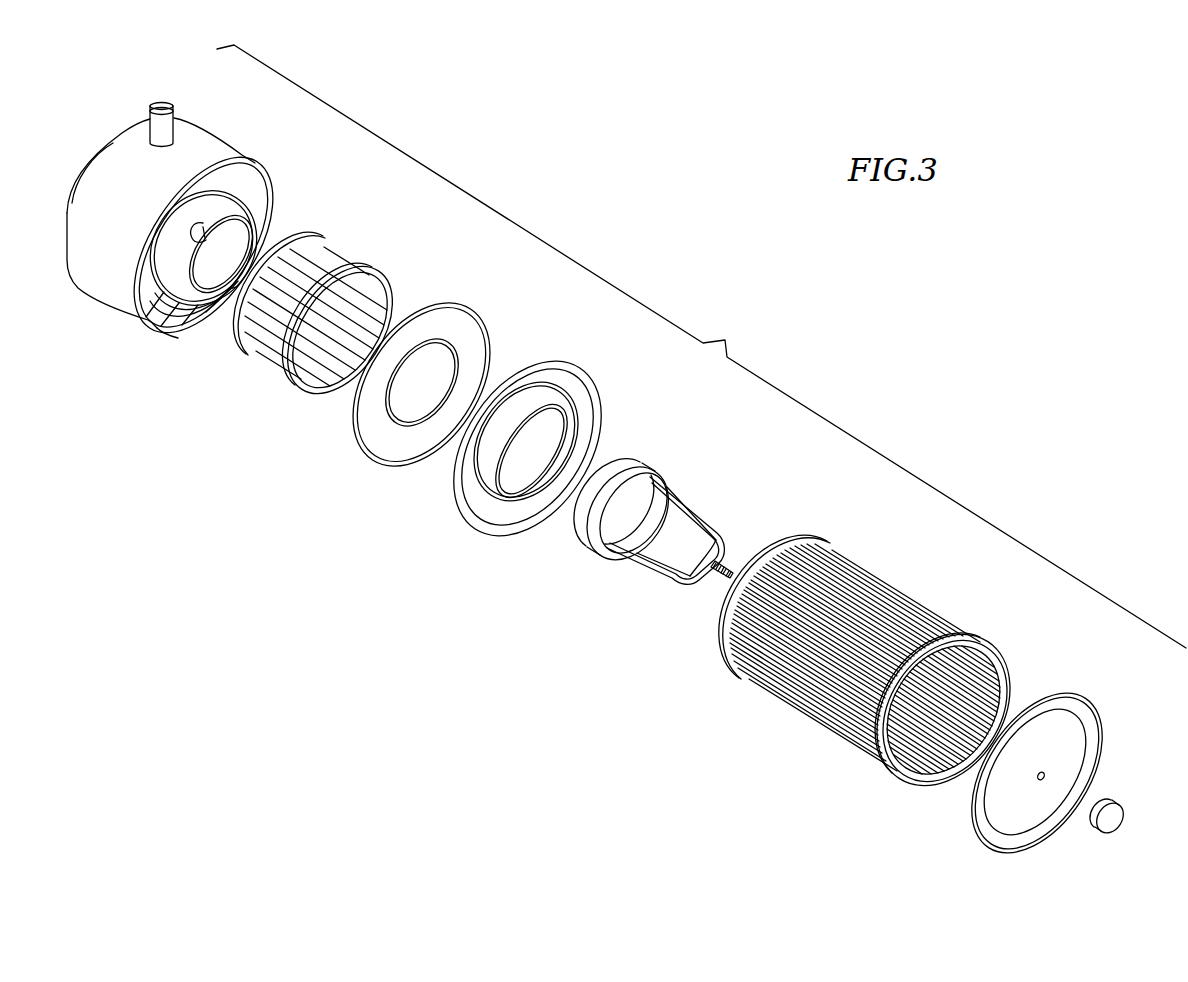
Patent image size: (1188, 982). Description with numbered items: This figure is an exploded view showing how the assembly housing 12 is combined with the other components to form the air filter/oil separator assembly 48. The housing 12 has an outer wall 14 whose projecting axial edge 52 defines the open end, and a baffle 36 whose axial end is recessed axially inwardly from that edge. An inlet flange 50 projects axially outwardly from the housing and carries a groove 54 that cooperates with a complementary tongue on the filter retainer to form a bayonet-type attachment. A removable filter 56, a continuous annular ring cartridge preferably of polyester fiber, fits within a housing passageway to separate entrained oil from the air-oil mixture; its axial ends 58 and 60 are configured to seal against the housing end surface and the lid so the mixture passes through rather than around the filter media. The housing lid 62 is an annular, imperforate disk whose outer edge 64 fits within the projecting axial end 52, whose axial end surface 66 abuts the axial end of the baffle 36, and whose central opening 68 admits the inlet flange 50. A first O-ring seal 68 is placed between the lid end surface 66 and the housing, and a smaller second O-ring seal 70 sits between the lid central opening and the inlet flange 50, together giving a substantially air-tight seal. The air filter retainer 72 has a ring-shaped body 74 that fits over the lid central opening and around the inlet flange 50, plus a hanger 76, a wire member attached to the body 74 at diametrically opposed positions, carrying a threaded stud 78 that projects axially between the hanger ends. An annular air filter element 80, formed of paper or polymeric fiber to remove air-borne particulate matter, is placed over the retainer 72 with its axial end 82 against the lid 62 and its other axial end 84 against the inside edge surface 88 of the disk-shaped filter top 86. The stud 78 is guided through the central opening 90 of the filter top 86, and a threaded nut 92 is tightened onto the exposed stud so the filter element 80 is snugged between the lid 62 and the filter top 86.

The assembly housing 12 is at (190, 142).
The housing outer wall 14 is at (125, 292).
The baffle 36 is at (166, 315).
The air filter/oil separator assembly 48 is at (701, 346).
The inlet flange 50 is at (183, 300).
The axial edge of housing outer wall 52 is at (272, 191).
The groove 54 is at (210, 228).
The removable filter 56 is at (266, 378).
The axial end of filter element 58 is at (233, 338).
The axial end of filter element 60 is at (314, 393).
The housing lid 62 is at (448, 528).
The outer edge of lid 64 is at (455, 479).
The axial end surface of lid 66 is at (531, 363).
The central opening of lid / first O-ring seal 68 is at (377, 460).
The second O-ring seal 70 is at (447, 337).
The air filter retainer 72 is at (575, 546).
The ring-shaped body 74 is at (632, 467).
The hanger 76 is at (650, 573).
The threaded stud 78 is at (745, 545).
The air filter element 80 is at (780, 728).
The axial end of air filter element 82 is at (718, 634).
The axial end of air filter element 84 is at (907, 788).
The filter top 86 is at (978, 826).
The inside edge surface 88 is at (1048, 691).
The central opening of filter top 90 is at (1043, 776).
The threaded nut 92 is at (1122, 806).